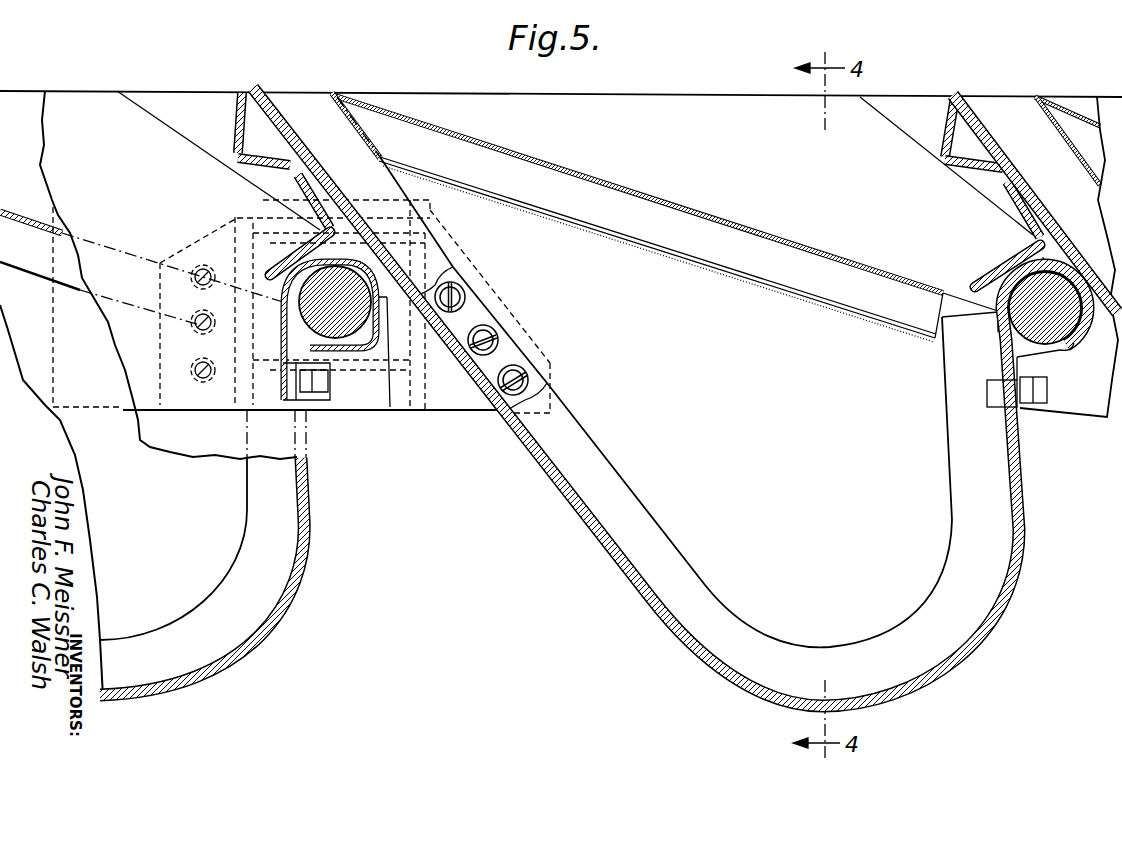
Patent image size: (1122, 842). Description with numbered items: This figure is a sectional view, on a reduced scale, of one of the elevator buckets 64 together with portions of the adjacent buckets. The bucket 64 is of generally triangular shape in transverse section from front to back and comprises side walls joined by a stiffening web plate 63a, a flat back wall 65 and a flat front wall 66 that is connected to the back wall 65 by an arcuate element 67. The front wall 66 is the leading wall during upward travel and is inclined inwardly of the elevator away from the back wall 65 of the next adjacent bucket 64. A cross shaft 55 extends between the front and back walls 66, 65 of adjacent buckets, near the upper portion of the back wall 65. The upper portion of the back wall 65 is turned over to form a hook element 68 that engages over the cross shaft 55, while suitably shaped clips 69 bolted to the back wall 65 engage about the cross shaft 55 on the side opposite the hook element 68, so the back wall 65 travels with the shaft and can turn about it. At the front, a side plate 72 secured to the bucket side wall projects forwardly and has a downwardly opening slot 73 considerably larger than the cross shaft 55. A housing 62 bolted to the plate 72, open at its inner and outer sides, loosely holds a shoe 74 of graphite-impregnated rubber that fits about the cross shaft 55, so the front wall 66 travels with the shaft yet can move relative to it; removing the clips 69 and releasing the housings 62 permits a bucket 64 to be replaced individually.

The cross shaft 55 is at (344, 326).
The housing 62 is at (220, 393).
The stiffening web plate 63a is at (785, 436).
The bucket 64 is at (636, 628).
The back wall 65 is at (1020, 462).
The front wall 66 is at (556, 500).
The arcuate element 67 is at (938, 670).
The hook element 68 is at (1003, 292).
The clip 69 is at (1062, 356).
The side plate 72 is at (137, 413).
The slot 73 is at (288, 411).
The shoe 74 is at (378, 360).